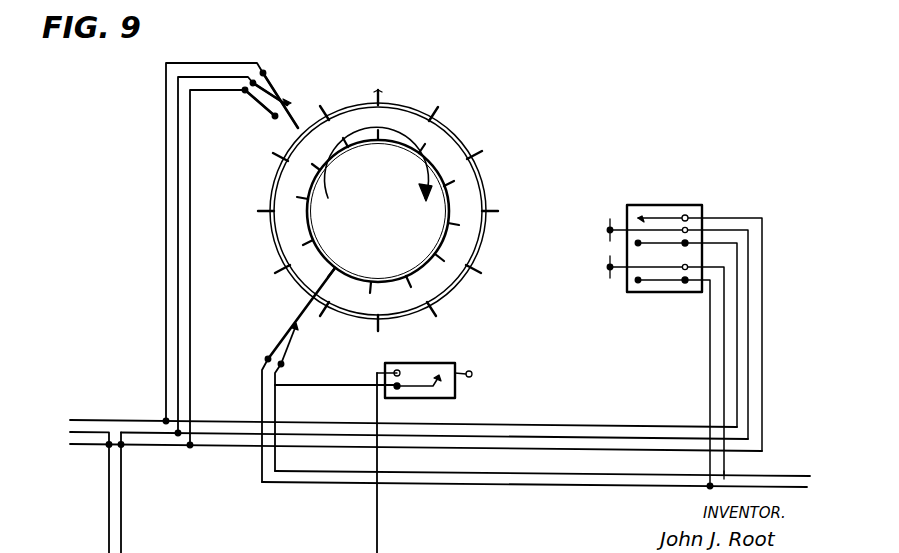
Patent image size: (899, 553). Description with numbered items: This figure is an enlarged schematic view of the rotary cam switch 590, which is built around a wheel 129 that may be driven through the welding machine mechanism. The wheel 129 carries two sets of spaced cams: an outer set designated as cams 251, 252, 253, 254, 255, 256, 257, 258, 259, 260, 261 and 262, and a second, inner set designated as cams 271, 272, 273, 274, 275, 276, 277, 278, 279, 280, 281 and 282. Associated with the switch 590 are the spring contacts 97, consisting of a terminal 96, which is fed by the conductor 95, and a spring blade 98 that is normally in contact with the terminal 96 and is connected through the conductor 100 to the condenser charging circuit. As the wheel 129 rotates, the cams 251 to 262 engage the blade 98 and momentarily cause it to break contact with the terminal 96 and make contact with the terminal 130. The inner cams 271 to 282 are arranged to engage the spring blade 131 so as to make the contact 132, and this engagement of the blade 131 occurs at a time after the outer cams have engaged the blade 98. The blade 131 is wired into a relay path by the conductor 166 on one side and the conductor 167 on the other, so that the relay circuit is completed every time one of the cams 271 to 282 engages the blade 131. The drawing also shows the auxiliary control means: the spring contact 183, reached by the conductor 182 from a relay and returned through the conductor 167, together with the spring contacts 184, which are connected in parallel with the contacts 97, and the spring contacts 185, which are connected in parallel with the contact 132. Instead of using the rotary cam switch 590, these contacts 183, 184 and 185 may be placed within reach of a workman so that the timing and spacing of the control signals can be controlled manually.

The conductor 95 is at (137, 446).
The terminal 96 is at (245, 92).
The spring contacts 97 is at (291, 105).
The spring blade 98 is at (270, 92).
The conductor 100 is at (148, 432).
The wheel 129 is at (473, 205).
The terminal 130 is at (263, 71).
The spring blade 131 is at (290, 345).
The contact 132 is at (293, 332).
The conductor 166 is at (806, 487).
The conductor 167 is at (799, 476).
The conductor 182 is at (378, 528).
The spring contact 183 is at (448, 380).
The spring contacts 184 is at (640, 218).
The spring contacts 185 is at (642, 284).
The cam 251 is at (283, 157).
The cam 252 is at (268, 211).
The cam 253 is at (278, 270).
The cam 254 is at (322, 316).
The cam 255 is at (380, 326).
The cam 256 is at (438, 312).
The cam 257 is at (482, 270).
The cam 258 is at (497, 212).
The cam 259 is at (483, 153).
The cam 260 is at (438, 111).
The cam 261 is at (380, 94).
The cam 262 is at (322, 110).
The cam 271 is at (372, 292).
The cam 272 is at (411, 285).
The cam 273 is at (441, 258).
The cam 274 is at (458, 226).
The cam 275 is at (455, 184).
The cam 276 is at (424, 150).
The cam 277 is at (380, 134).
The cam 278 is at (346, 143).
The cam 279 is at (314, 168).
The cam 280 is at (297, 192).
The cam 281 is at (308, 242).
The cam 282 is at (330, 273).
The rotary cam switch 590 is at (447, 132).